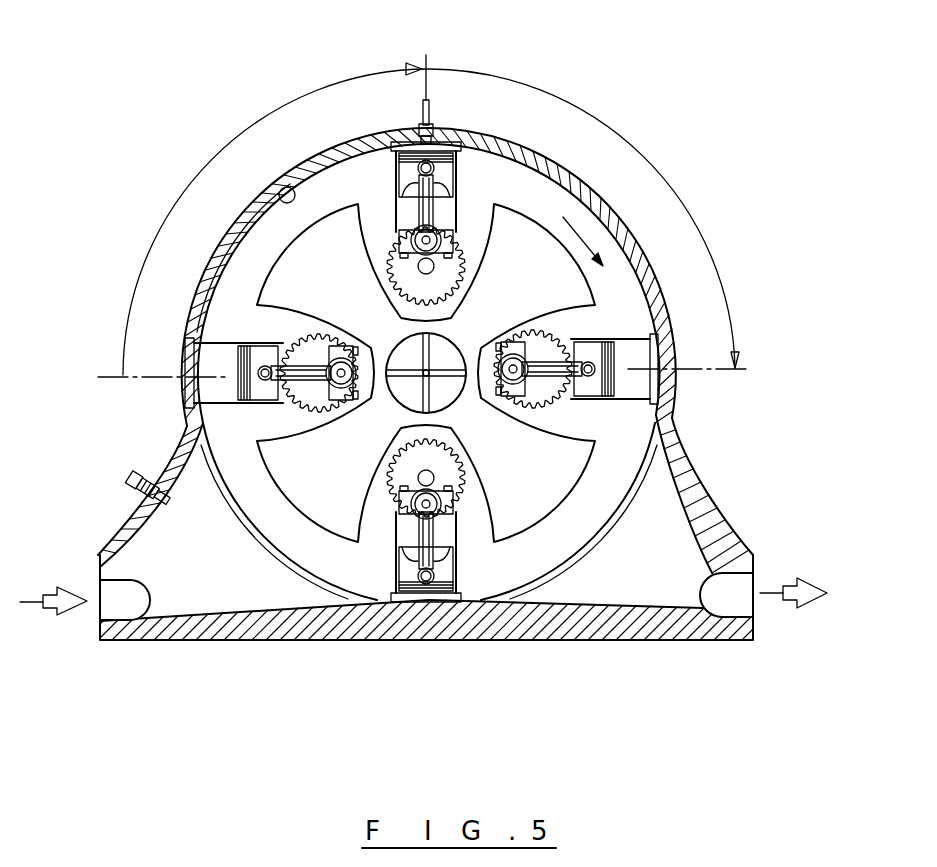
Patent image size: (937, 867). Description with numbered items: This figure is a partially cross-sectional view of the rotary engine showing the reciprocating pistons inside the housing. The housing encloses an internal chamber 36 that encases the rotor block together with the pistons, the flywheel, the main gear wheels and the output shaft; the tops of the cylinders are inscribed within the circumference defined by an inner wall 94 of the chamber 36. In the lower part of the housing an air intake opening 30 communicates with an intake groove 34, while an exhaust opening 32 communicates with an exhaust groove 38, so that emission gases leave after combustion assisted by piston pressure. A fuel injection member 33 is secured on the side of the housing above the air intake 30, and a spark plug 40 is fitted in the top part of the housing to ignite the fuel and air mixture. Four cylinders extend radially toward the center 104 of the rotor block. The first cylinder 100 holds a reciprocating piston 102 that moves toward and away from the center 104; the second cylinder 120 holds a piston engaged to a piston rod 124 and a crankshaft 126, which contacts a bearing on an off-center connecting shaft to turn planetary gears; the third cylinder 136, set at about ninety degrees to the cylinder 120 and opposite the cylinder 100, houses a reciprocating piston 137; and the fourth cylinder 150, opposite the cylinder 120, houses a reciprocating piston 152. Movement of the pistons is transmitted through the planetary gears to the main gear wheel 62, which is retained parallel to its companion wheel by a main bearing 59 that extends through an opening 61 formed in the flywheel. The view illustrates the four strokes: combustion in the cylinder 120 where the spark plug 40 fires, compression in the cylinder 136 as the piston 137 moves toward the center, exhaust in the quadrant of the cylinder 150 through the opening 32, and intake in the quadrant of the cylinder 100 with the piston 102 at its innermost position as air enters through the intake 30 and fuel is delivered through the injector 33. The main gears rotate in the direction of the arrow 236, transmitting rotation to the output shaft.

The air intake opening 30 is at (110, 598).
The exhaust opening 32 is at (743, 588).
The fuel injection member 33 is at (133, 480).
The intake groove 34 is at (297, 573).
The internal chamber 36 is at (360, 178).
The exhaust groove 38 is at (532, 590).
The spark plug 40 is at (433, 108).
The main bearing 59 is at (392, 413).
The opening 61 is at (450, 387).
The main gear wheel 62 is at (462, 305).
The inner wall 94 is at (287, 193).
The first cylinder 100 is at (222, 352).
The reciprocating piston 102 is at (230, 381).
The center 104 is at (426, 373).
The second cylinder 120 is at (458, 173).
The piston rod 124 is at (430, 207).
The crankshaft 126 is at (467, 230).
The third cylinder 136 is at (632, 342).
The reciprocating piston 137 is at (613, 370).
The fourth cylinder 150 is at (455, 576).
The reciprocating piston 152 is at (415, 593).
The arrow 236 is at (588, 238).